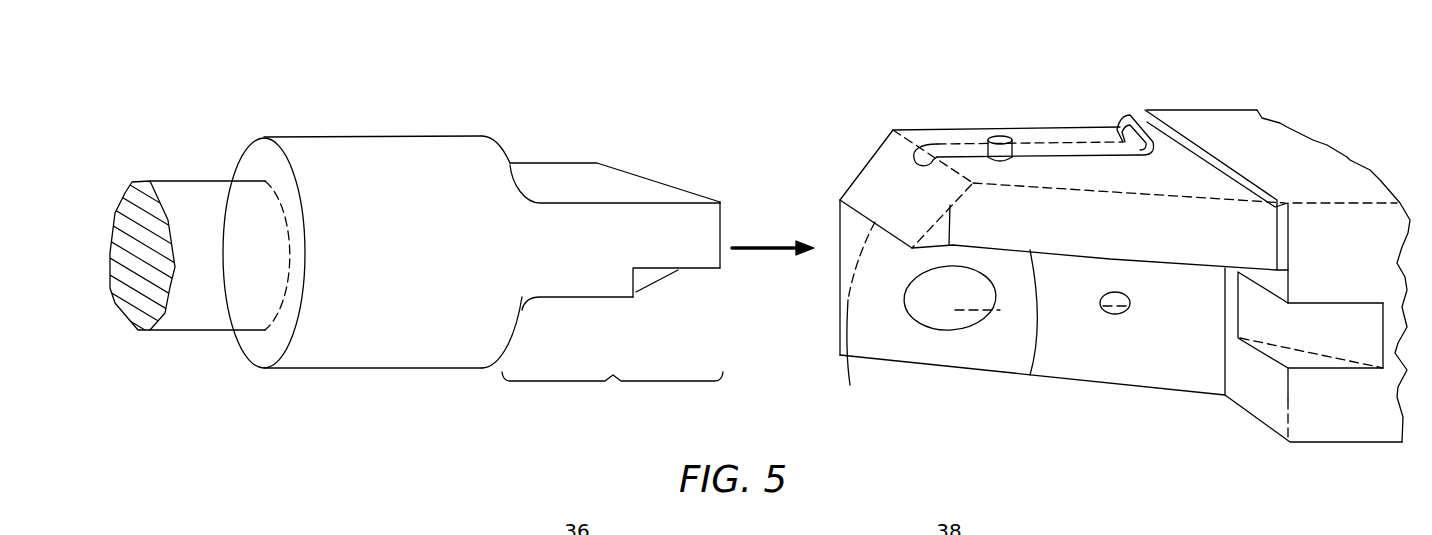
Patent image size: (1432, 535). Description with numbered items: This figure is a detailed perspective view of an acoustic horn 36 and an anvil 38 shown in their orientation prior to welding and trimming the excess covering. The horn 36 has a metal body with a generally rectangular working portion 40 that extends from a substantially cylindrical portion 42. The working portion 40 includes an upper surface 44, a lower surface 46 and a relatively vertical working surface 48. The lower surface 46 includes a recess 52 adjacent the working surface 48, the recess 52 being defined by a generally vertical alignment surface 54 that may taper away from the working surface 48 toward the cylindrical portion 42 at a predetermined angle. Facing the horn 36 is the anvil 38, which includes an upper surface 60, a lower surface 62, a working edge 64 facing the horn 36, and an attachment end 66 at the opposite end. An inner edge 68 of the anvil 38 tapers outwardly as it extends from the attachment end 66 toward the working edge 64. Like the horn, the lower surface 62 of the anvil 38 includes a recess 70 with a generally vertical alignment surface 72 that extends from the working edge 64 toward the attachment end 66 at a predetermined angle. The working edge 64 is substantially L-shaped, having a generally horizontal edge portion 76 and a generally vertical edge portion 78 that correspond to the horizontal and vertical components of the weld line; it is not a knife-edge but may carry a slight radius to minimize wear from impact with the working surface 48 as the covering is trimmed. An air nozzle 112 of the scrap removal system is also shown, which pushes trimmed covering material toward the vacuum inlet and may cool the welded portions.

The acoustic horn 36 is at (540, 130).
The anvil 38 is at (975, 113).
The working portion 40 is at (612, 394).
The cylindrical portion 42 is at (310, 355).
The upper surface 44 is at (583, 168).
The lower surface 46 is at (590, 298).
The working surface 48 is at (730, 229).
The recess 52 is at (692, 272).
The alignment surface 54 is at (640, 280).
The upper surface 60 is at (1090, 175).
The lower surface 62 is at (1060, 380).
The working edge 64 is at (832, 337).
The attachment end 66 is at (1233, 358).
The inner edge 68 is at (1202, 232).
The recess 70 is at (1030, 375).
The alignment surface 72 is at (978, 353).
The horizontal edge portion 76 is at (850, 385).
The vertical edge portion 78 is at (836, 219).
The air nozzle 112 is at (935, 147).